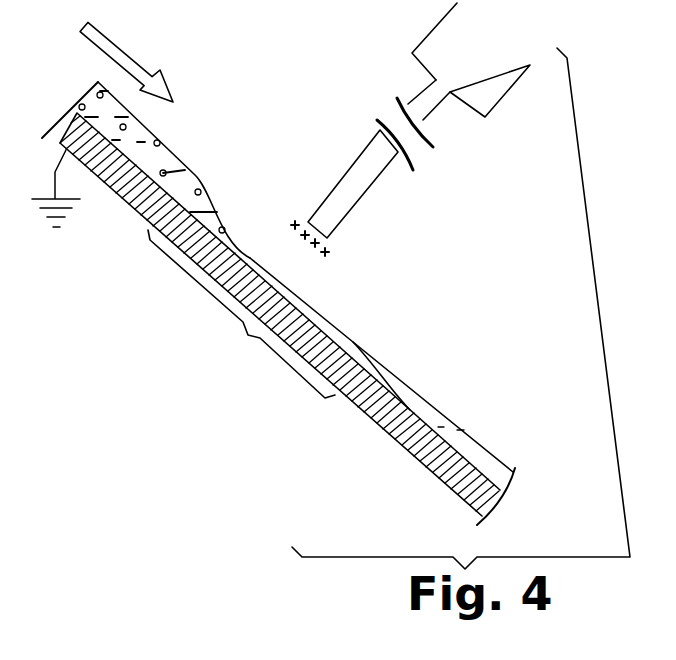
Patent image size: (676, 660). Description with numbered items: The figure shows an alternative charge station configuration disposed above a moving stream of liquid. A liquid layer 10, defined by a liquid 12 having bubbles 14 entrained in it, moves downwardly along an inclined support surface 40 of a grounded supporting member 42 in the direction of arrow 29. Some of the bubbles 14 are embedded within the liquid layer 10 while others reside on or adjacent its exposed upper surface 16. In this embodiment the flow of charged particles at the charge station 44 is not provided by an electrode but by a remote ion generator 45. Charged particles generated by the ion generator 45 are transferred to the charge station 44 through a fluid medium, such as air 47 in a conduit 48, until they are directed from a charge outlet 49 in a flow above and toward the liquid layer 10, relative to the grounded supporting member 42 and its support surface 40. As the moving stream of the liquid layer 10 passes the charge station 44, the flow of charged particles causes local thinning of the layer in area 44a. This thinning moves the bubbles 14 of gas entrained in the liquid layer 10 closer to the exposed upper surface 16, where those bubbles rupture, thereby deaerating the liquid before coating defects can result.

The liquid layer 10 is at (517, 483).
The liquid 12 is at (437, 413).
The bubbles 14 is at (157, 143).
The exposed upper surface 16 is at (355, 342).
The arrow 29 is at (117, 42).
The inclined support surface 40 is at (377, 368).
The supporting member 42 is at (495, 507).
The charge station 44 is at (304, 132).
The area of local thinning 44a is at (241, 314).
The remote ion generator 45 is at (482, 72).
The air 47 is at (450, 113).
The conduit 48 is at (377, 188).
The charge outlet 49 is at (327, 232).